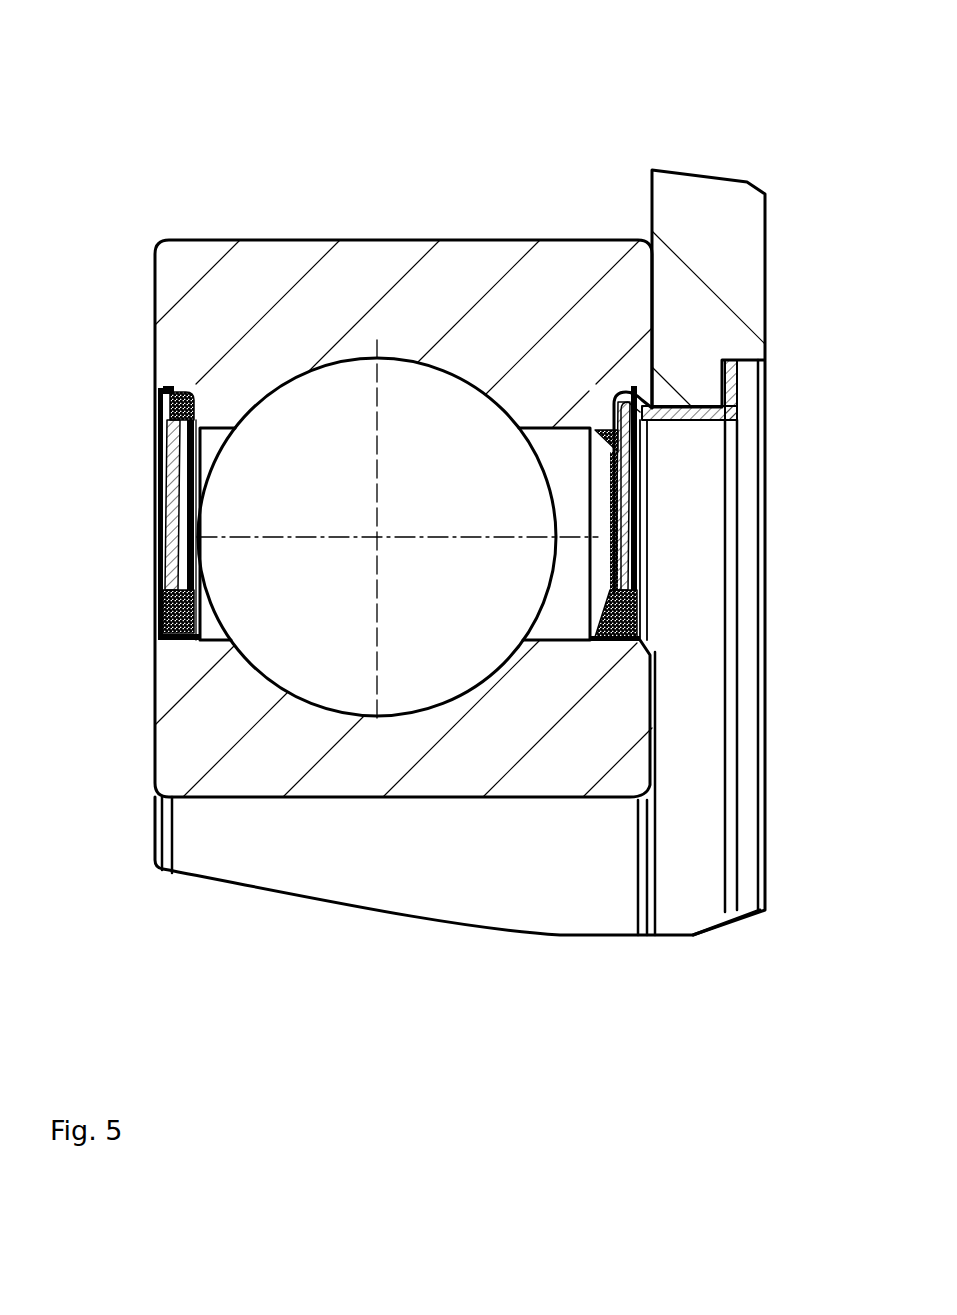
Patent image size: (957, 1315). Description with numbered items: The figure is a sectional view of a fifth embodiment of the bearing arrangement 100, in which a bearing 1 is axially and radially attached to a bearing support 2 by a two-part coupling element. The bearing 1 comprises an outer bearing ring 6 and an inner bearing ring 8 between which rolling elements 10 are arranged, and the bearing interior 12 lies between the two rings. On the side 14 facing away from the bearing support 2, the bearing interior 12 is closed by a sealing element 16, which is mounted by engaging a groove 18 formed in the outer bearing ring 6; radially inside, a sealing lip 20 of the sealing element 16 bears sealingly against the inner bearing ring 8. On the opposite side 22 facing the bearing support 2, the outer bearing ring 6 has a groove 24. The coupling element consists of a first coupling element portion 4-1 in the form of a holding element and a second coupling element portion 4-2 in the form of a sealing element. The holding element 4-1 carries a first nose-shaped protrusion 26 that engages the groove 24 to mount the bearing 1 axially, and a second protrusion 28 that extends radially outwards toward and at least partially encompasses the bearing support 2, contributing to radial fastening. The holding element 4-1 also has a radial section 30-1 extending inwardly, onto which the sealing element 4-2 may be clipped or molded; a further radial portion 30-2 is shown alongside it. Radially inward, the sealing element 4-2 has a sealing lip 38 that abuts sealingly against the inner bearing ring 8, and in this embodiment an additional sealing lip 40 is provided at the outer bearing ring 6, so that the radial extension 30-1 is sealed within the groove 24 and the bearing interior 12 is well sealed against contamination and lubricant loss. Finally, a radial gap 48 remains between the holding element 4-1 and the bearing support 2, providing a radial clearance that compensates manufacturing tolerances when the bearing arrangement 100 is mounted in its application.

The bearing arrangement 100 is at (357, 37).
The bearing 1 is at (423, 203).
The bearing support 2 is at (702, 203).
The outer bearing ring 6 is at (487, 270).
The side facing the bearing support 22 is at (842, 268).
The side facing away from the bearing support 14 is at (76, 296).
The groove 18 is at (178, 390).
The groove 24 is at (624, 392).
The first nose-shaped protrusion 26 is at (618, 399).
The second protrusion 28 is at (736, 384).
The radial gap 48 is at (738, 410).
The first coupling element portion 4-1 is at (722, 425).
The further sealing lip 40 is at (626, 440).
The bearing interior 12 is at (571, 478).
The sealing element 16 is at (165, 505).
The second sealing lip 30-2 is at (640, 537).
The radial section 30-1 is at (625, 568).
The sealing lip 20 is at (160, 627).
The second coupling element portion 4-2 is at (643, 610).
The rolling elements 10 is at (272, 640).
The sealing lip 38 is at (628, 633).
The inner bearing ring 8 is at (432, 782).